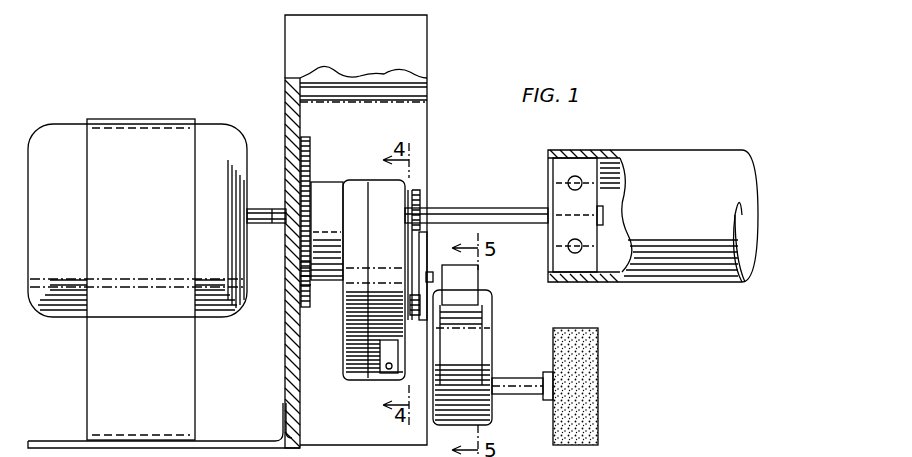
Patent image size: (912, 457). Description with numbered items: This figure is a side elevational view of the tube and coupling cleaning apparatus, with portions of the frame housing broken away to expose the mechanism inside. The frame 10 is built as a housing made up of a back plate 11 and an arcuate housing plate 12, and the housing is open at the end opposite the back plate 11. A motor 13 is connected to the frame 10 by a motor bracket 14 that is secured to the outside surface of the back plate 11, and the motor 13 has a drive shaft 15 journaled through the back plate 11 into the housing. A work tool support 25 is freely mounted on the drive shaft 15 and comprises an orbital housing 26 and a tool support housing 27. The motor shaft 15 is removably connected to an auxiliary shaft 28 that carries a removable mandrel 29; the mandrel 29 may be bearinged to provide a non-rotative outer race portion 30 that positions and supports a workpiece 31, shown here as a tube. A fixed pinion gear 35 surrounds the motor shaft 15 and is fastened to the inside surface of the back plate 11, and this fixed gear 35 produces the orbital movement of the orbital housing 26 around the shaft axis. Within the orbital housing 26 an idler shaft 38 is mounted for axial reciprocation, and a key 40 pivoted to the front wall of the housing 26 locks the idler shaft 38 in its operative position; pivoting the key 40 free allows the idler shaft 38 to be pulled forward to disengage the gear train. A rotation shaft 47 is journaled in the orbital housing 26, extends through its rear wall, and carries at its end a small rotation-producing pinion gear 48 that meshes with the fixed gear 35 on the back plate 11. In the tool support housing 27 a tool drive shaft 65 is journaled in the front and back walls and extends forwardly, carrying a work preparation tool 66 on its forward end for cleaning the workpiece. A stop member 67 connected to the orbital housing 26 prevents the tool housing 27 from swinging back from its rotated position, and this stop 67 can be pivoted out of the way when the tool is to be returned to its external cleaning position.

The frame 10 is at (283, 30).
The back plate 11 is at (292, 118).
The arcuate housing plate 12 is at (420, 32).
The motor 13 is at (48, 132).
The motor bracket 14 is at (98, 368).
The drive shaft 15 is at (264, 215).
The work tool support 25 is at (347, 390).
The orbital housing 26 is at (345, 360).
The tool support housing 27 is at (470, 348).
The auxiliary shaft 28 is at (493, 209).
The mandrel 29 is at (566, 183).
The outer race portion 30 is at (566, 246).
The workpiece 31 is at (681, 162).
The fixed pinion gear 35 is at (307, 152).
The idler shaft 38 is at (433, 280).
The key 40 is at (424, 260).
The rotation shaft 47 is at (328, 284).
The rotation-producing pinion gear 48 is at (300, 277).
The tool drive shaft 65 is at (528, 378).
The work preparation tool 66 is at (585, 372).
The stop member 67 is at (380, 381).